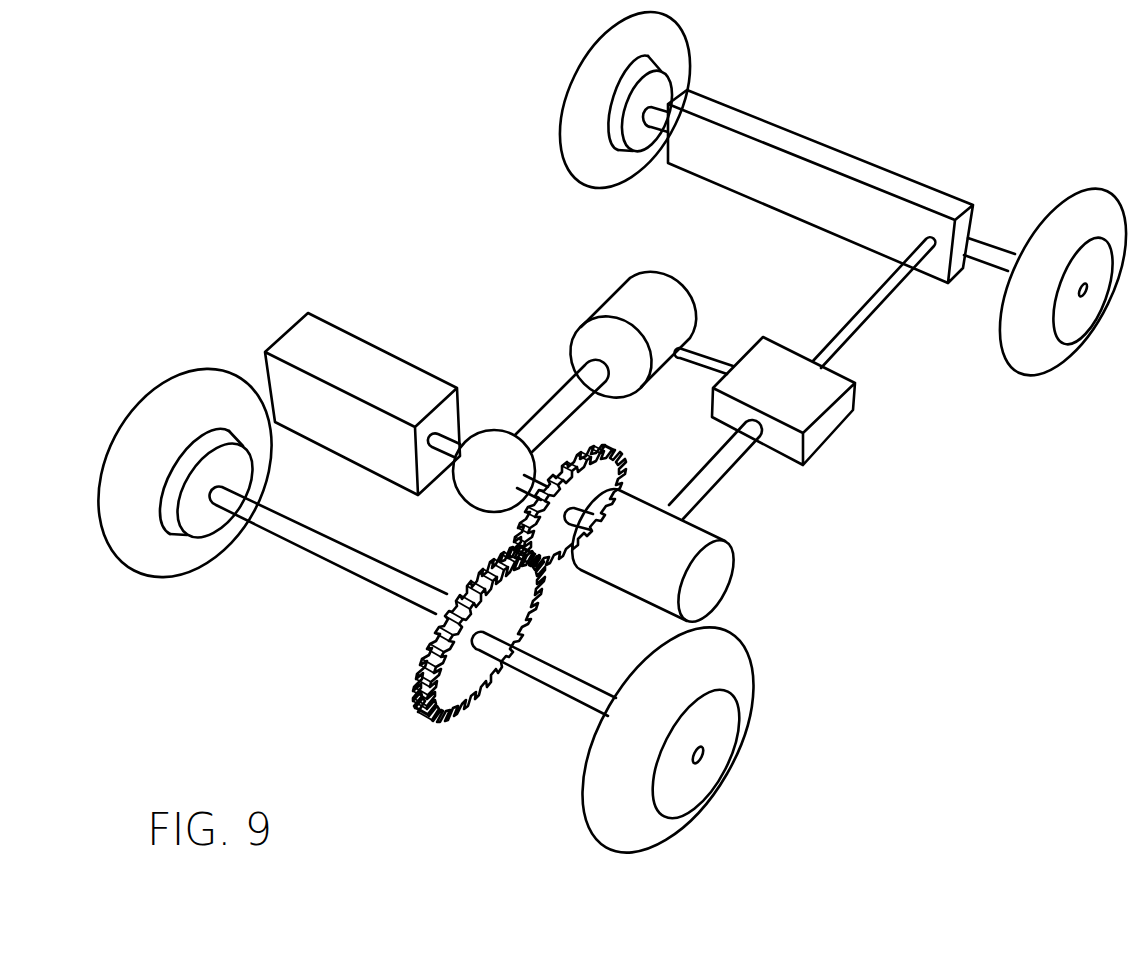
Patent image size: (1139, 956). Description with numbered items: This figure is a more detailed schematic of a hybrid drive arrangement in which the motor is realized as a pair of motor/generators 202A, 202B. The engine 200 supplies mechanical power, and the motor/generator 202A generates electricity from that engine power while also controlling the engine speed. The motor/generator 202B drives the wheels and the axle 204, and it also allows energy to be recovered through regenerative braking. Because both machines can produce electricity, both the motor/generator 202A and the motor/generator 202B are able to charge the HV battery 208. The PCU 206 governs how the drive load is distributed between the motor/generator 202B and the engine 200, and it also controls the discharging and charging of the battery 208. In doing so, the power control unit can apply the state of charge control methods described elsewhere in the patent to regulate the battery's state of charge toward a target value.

The engine 200 is at (380, 362).
The motor/generator 202A is at (617, 302).
The motor/generator 202B is at (723, 572).
The axle 204 is at (568, 686).
The PCU 206 is at (835, 417).
The HV battery 208 is at (853, 164).